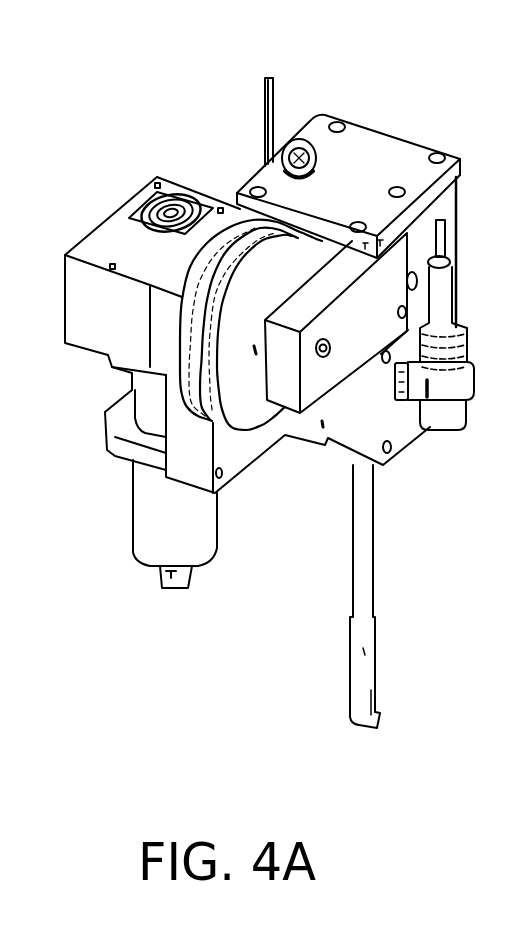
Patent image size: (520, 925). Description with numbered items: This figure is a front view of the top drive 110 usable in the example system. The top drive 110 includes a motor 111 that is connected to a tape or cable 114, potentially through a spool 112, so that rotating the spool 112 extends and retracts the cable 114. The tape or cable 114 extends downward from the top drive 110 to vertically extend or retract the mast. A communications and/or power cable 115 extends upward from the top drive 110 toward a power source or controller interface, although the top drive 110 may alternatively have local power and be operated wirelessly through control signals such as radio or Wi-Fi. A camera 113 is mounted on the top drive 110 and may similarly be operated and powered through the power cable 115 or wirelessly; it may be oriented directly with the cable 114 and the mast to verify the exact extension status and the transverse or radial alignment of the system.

The top drive 110 is at (383, 133).
The motor 111 is at (123, 248).
The spool 112 is at (247, 393).
The camera 113 is at (177, 525).
The tape or cable 114 is at (362, 600).
The communications and/or power cable 115 is at (268, 123).